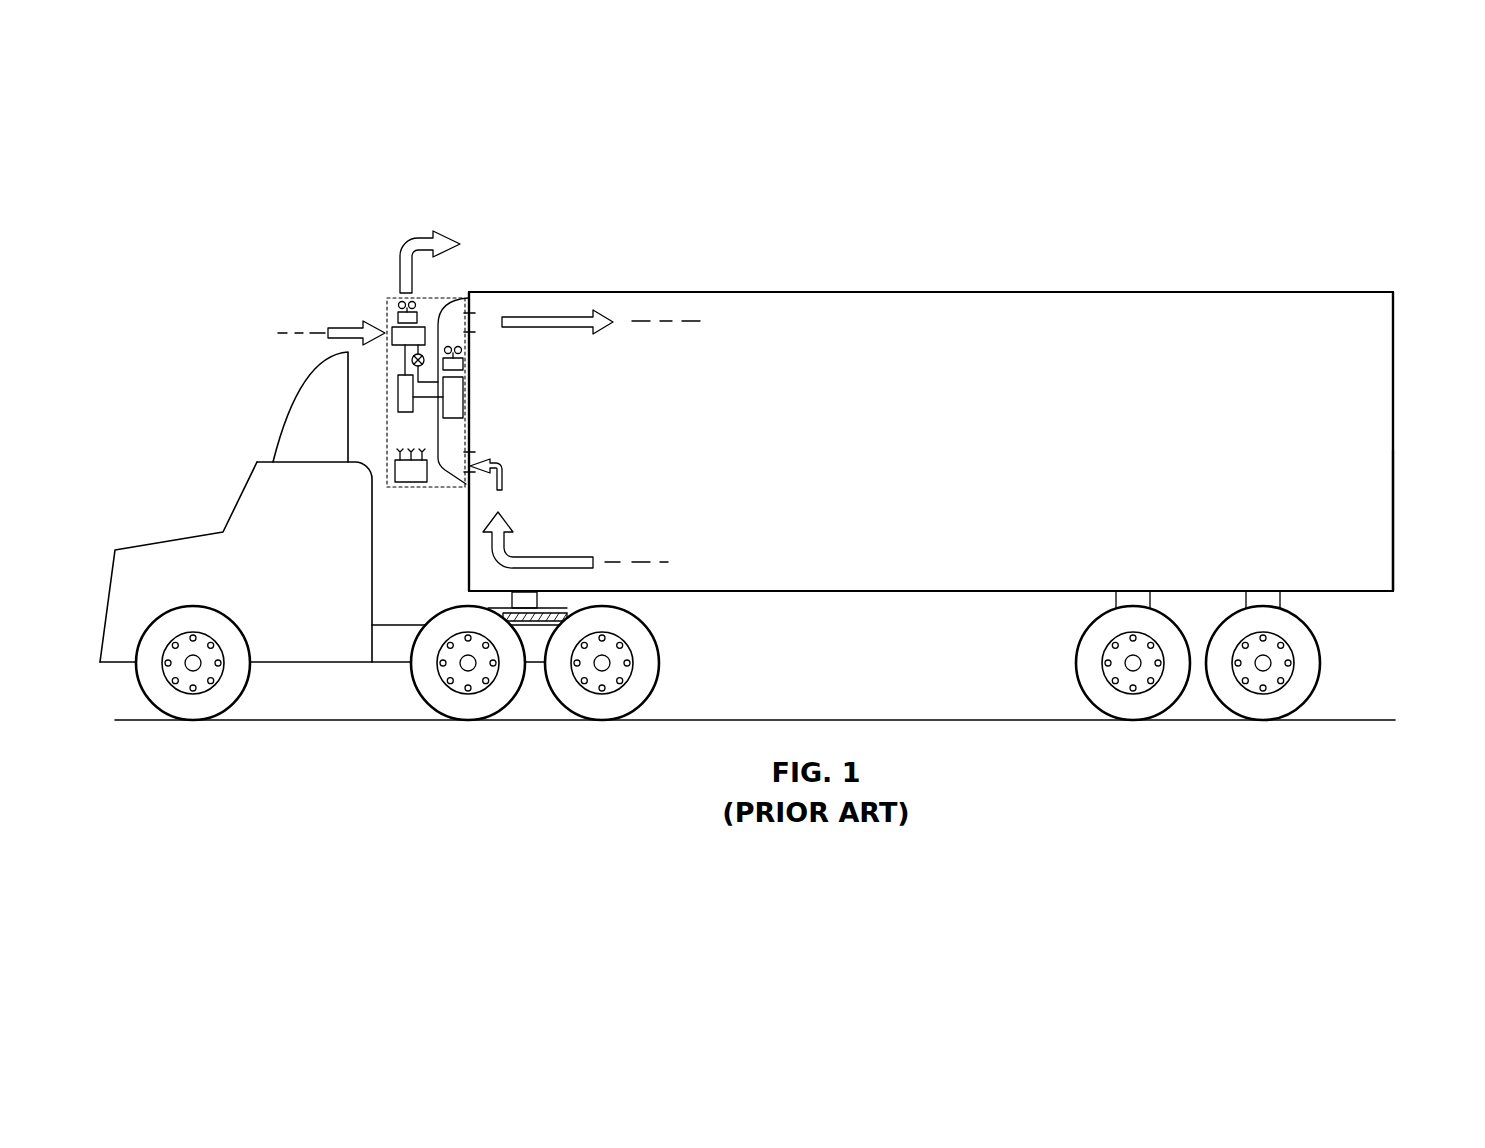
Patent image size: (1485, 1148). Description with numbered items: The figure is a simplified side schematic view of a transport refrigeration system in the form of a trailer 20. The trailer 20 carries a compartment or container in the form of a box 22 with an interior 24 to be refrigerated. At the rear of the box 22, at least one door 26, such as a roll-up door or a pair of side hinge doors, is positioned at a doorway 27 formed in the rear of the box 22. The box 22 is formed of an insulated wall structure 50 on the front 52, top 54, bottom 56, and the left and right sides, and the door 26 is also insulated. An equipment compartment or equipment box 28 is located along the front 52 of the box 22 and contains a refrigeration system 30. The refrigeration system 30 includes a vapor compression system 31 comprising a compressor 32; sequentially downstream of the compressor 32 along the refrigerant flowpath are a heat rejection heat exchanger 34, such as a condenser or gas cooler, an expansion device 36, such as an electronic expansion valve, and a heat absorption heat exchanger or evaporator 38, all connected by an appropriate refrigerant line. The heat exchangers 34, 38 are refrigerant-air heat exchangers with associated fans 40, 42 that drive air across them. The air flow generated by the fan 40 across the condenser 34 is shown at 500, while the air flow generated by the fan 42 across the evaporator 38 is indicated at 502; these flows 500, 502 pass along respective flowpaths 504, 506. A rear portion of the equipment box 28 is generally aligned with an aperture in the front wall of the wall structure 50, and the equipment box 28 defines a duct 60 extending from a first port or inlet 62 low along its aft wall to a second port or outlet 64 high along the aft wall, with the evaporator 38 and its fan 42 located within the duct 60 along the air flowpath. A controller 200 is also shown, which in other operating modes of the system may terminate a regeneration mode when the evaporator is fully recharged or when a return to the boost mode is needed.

The trailer 20 is at (783, 447).
The box 22 is at (932, 424).
The interior 24 is at (652, 446).
The door 26 is at (1397, 466).
The doorway 27 is at (1397, 516).
The equipment compartment 28 is at (408, 361).
The refrigeration system 30 is at (385, 404).
The vapor compression system 31 is at (421, 353).
The compressor 32 is at (407, 404).
The heat rejection heat exchanger 34 is at (395, 334).
The expansion device 36 is at (443, 312).
The heat absorption heat exchanger 38 is at (456, 400).
The fan 40 is at (398, 316).
The fan 42 is at (463, 365).
The insulated wall structure 50 is at (842, 291).
The front 52 is at (467, 555).
The top 54 is at (763, 291).
The bottom 56 is at (930, 591).
The duct 60 is at (458, 437).
The first port 62 is at (496, 495).
The second port 64 is at (470, 320).
The controller 200 is at (407, 479).
The air flow 500 is at (418, 240).
The air flow 502 is at (547, 324).
The flowpath 504 is at (298, 333).
The flowpath 506 is at (664, 323).